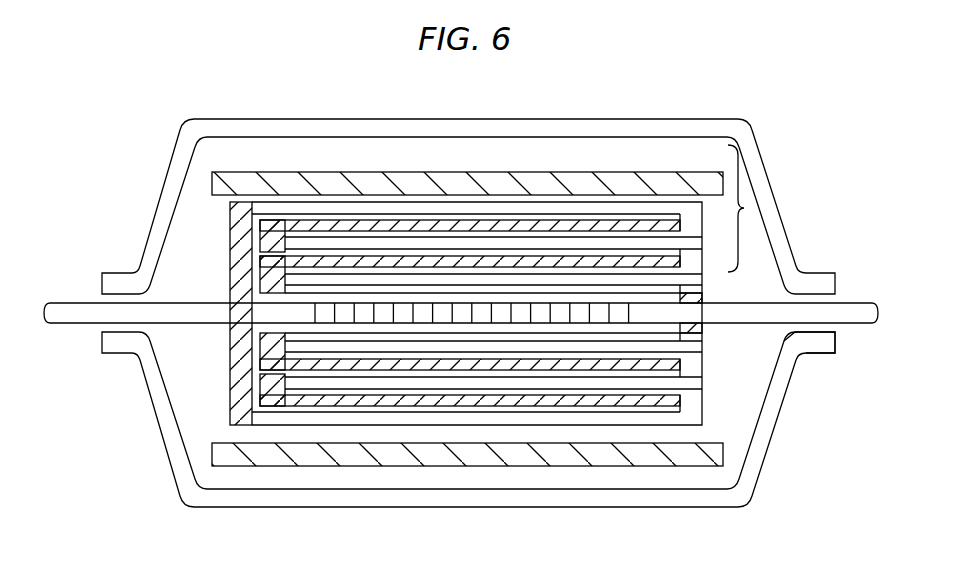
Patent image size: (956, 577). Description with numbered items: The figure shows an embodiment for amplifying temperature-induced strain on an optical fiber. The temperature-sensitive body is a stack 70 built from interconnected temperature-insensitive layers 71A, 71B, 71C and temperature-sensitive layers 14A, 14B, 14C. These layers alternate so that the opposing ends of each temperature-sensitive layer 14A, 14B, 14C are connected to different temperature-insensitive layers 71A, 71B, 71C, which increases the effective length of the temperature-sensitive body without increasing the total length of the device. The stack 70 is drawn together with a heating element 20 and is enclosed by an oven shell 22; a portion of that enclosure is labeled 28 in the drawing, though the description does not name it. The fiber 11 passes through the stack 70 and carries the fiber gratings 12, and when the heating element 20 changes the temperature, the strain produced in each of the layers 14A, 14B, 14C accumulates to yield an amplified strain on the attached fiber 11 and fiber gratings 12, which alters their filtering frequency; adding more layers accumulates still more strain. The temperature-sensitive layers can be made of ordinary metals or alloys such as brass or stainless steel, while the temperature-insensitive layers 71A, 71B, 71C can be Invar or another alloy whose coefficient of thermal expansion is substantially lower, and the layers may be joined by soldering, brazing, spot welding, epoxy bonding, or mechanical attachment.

The fiber 11 is at (850, 300).
The fiber gratings 12 is at (485, 313).
The temperature-sensitive layer 14A is at (487, 288).
The temperature-sensitive layer 14B is at (551, 248).
The temperature-sensitive layer 14C is at (613, 207).
The heating element 20 is at (357, 176).
The oven shell 22 is at (243, 128).
The housing flange 28 is at (713, 333).
The stack 70 is at (744, 208).
The temperature-insensitive layer 71A is at (230, 246).
The temperature-insensitive layer 71B is at (414, 264).
The temperature-insensitive layer 71C is at (354, 228).